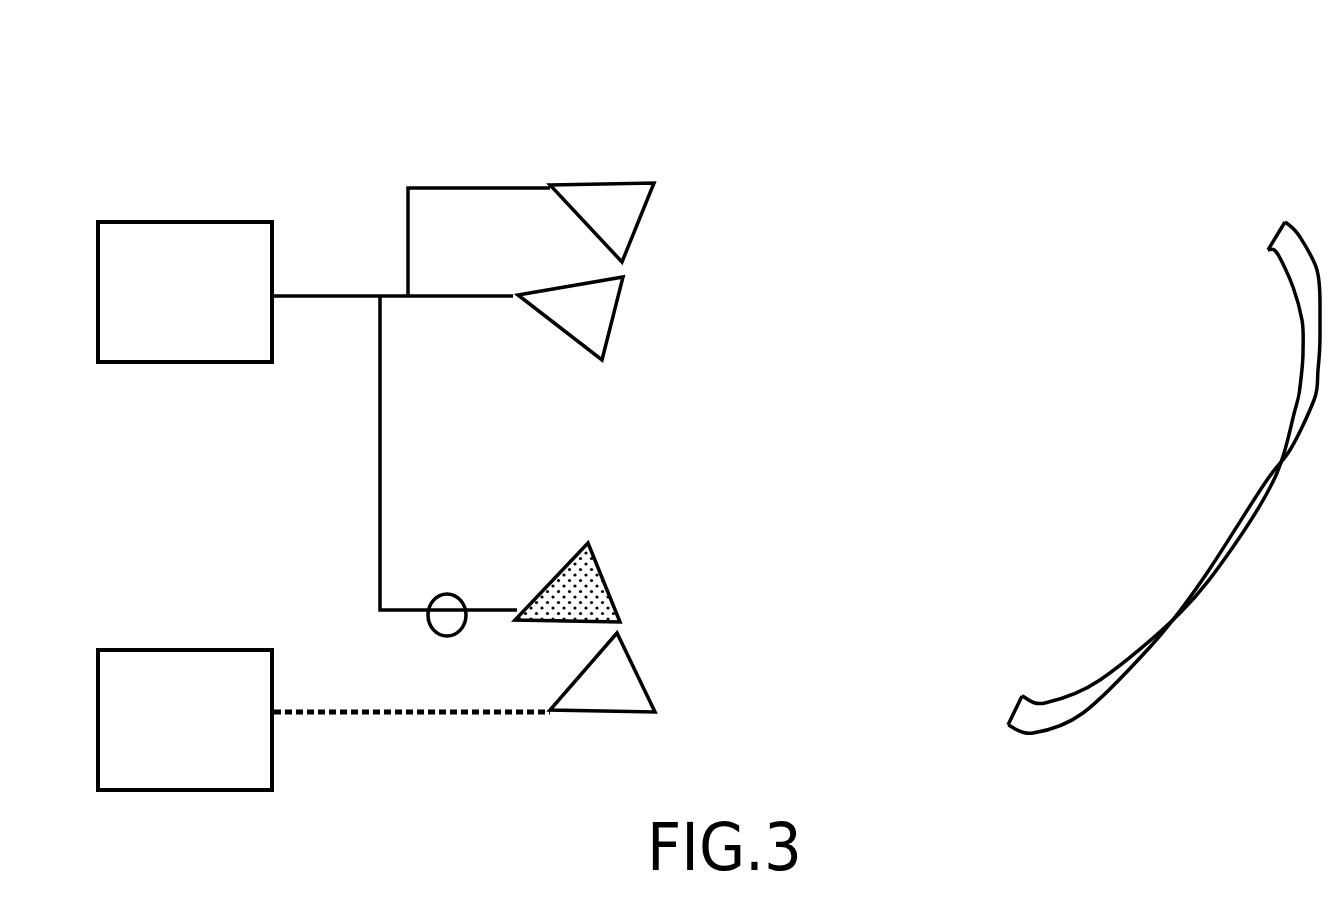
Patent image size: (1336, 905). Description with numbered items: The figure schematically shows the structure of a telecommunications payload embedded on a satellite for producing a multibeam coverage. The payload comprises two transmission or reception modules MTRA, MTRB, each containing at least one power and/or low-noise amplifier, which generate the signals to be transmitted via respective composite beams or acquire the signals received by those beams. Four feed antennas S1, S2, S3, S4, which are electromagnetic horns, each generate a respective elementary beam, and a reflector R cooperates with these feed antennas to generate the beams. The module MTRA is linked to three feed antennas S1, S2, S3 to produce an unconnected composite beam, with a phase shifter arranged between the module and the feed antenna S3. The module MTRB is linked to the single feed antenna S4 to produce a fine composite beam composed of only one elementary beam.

The transmission or reception module MTRA is at (185, 292).
The transmission or reception module MTRB is at (185, 720).
The feed antenna S1 is at (660, 192).
The feed antenna S2 is at (640, 295).
The feed antenna S3 is at (612, 598).
The feed antenna S4 is at (635, 712).
The reflector R is at (1270, 222).